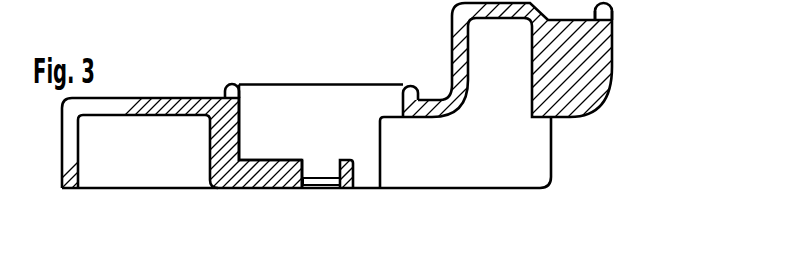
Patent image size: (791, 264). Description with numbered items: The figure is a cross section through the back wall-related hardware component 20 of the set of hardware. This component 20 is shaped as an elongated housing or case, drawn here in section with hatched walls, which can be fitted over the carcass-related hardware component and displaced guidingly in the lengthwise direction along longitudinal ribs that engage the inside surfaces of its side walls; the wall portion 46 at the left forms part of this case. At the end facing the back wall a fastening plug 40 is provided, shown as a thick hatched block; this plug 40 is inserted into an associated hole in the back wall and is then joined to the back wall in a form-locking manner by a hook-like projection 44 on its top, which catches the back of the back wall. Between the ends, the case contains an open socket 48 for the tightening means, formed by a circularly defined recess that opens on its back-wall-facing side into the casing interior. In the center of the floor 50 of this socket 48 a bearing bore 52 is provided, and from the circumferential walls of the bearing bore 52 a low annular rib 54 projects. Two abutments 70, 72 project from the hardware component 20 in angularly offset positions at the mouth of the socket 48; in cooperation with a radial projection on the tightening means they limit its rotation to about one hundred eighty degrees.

The back wall-related hardware component 20 is at (258, 76).
The fastening plug 40 is at (597, 78).
The hook-like projection 44 is at (613, 14).
The cap portion 46 is at (152, 97).
The open socket 48 is at (288, 97).
The floor 50 is at (255, 184).
The bearing bore 52 is at (339, 172).
The annular rib 54 is at (332, 187).
The abutment 70 is at (413, 84).
The abutment 72 is at (232, 84).